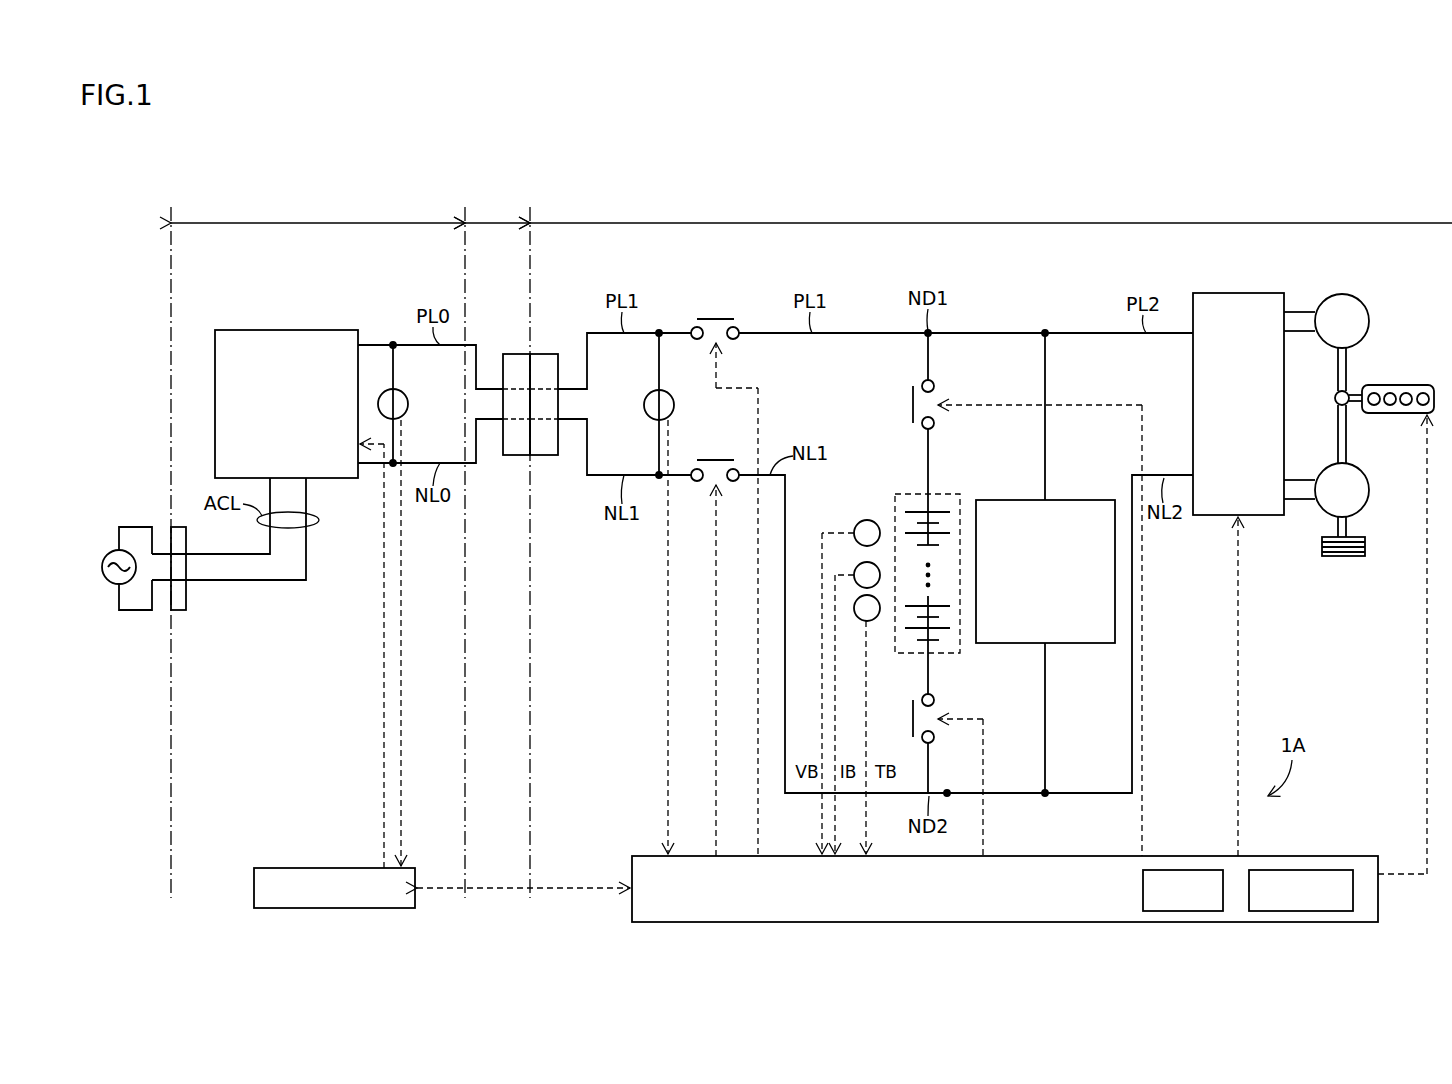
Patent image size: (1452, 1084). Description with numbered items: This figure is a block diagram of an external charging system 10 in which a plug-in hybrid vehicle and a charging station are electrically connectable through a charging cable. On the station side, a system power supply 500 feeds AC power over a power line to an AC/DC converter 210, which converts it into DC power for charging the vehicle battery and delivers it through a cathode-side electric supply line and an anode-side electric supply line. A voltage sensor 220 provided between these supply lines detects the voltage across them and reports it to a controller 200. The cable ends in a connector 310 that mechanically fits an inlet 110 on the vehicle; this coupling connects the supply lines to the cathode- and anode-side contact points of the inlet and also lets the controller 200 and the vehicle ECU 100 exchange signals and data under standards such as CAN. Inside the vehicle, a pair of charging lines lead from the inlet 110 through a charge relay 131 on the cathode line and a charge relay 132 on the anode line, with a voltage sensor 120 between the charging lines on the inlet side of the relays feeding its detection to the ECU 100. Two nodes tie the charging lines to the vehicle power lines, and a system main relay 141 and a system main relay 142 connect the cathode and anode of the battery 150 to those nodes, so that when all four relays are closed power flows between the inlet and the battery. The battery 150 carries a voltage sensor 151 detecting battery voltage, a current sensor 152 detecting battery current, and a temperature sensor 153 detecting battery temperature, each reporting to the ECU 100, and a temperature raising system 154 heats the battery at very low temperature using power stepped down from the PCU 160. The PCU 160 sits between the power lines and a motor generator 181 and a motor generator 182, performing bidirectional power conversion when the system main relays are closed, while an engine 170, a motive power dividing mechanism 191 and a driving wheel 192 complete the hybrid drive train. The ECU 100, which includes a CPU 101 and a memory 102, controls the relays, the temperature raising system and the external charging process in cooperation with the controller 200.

The external charging system 10 is at (985, 188).
The AC/DC converter 210 is at (250, 330).
The voltage sensor 220 is at (388, 391).
The connector 310 is at (511, 354).
The inlet 110 is at (549, 354).
The voltage sensor 120 is at (652, 394).
The charge relay 131 is at (716, 318).
The charge relay 132 is at (716, 459).
The system main relay 141 is at (910, 393).
The system main relay 142 is at (935, 742).
The battery 150 is at (900, 494).
The voltage sensor 151 is at (862, 520).
The current sensor 152 is at (855, 568).
The temperature sensor 153 is at (857, 617).
The temperature raising system 154 is at (1108, 500).
The power control unit 160 is at (1240, 293).
The motor generator 181 is at (1372, 321).
The motor generator 182 is at (1372, 490).
The motive power dividing mechanism 191 is at (1349, 392).
The engine 170 is at (1416, 385).
The driving wheel 192 is at (1365, 545).
The ECU 100 is at (1354, 856).
The CPU 101 is at (1192, 870).
The memory 102 is at (1325, 870).
The controller 200 is at (275, 868).
The system power supply 500 is at (110, 584).